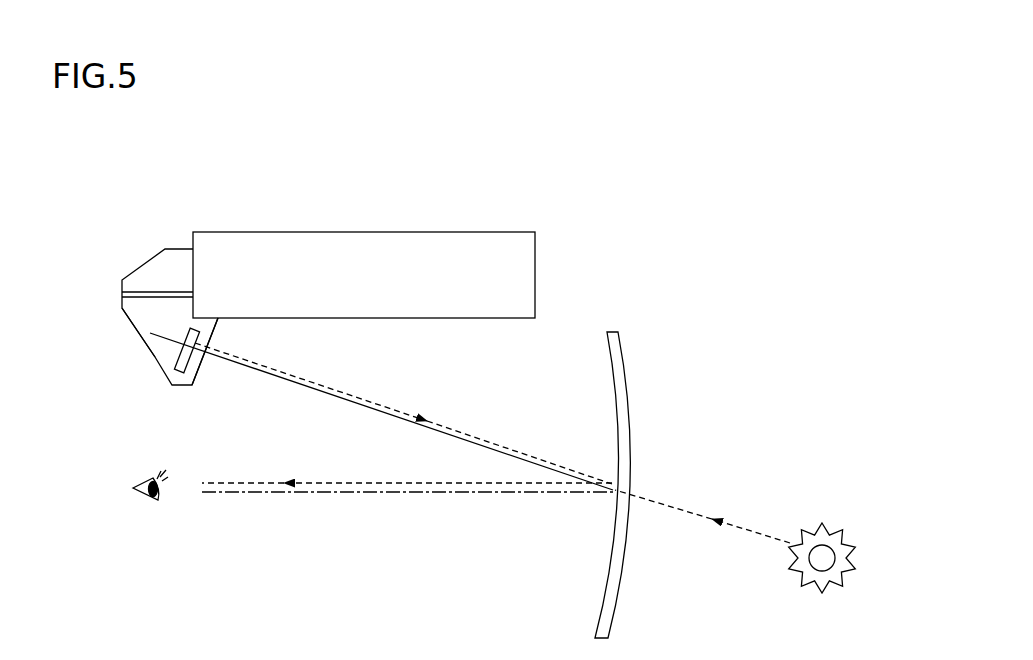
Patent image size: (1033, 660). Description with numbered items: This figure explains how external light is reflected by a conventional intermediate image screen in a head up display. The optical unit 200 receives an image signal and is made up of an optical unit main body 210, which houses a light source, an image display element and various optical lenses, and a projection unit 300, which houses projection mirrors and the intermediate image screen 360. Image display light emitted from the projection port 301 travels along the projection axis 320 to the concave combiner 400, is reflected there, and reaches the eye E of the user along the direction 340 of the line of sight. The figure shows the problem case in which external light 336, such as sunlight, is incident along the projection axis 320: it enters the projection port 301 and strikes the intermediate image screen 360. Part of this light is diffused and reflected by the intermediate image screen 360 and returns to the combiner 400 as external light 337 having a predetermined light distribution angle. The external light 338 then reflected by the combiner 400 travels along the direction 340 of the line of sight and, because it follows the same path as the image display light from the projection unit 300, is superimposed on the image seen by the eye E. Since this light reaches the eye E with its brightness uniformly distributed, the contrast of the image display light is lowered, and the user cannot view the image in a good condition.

The optical unit 200 is at (252, 200).
The optical unit main body 210 is at (482, 252).
The projection unit 300 is at (152, 278).
The projection port 301 is at (210, 383).
The projection axis 320 is at (307, 387).
The external light 336 is at (657, 500).
The external light 337 is at (470, 437).
The external light 338 is at (345, 483).
The direction of the line of sight 340 is at (357, 493).
The intermediate image screen 360 is at (162, 352).
The combiner 400 is at (628, 368).
The eye E is at (135, 491).